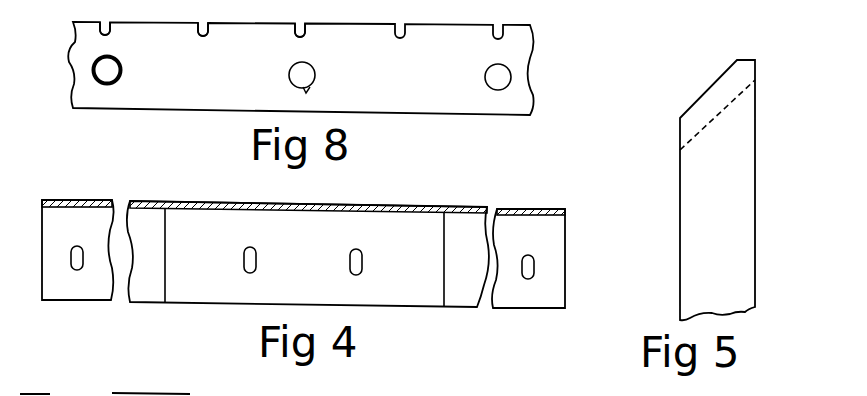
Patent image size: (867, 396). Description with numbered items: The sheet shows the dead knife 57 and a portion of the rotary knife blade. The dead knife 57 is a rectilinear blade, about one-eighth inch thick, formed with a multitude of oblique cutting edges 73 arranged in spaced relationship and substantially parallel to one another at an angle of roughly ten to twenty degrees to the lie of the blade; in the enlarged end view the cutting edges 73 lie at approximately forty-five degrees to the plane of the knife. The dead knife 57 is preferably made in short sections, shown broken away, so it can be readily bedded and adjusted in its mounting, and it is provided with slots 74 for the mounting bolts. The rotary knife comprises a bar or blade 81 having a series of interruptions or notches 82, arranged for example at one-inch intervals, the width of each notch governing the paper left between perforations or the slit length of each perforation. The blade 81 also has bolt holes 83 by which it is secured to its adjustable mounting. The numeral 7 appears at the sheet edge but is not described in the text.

In FIG. 4, the base member 7 is at (188, 395).
In FIG. 4, the dead knife 57 is at (194, 220).
In FIG. 5, the dead knife 57 is at (690, 163).
In FIG. 4, the oblique cutting edges 73 is at (398, 387).
In FIG. 5, the oblique cutting edges 73 is at (700, 97).
In FIG. 4, the slots 74 is at (78, 247).
In FIG. 8, the bar or blade 81 is at (138, 93).
In FIG. 8, the notches 82 is at (300, 34).
In FIG. 8, the bolt holes 83 is at (314, 79).